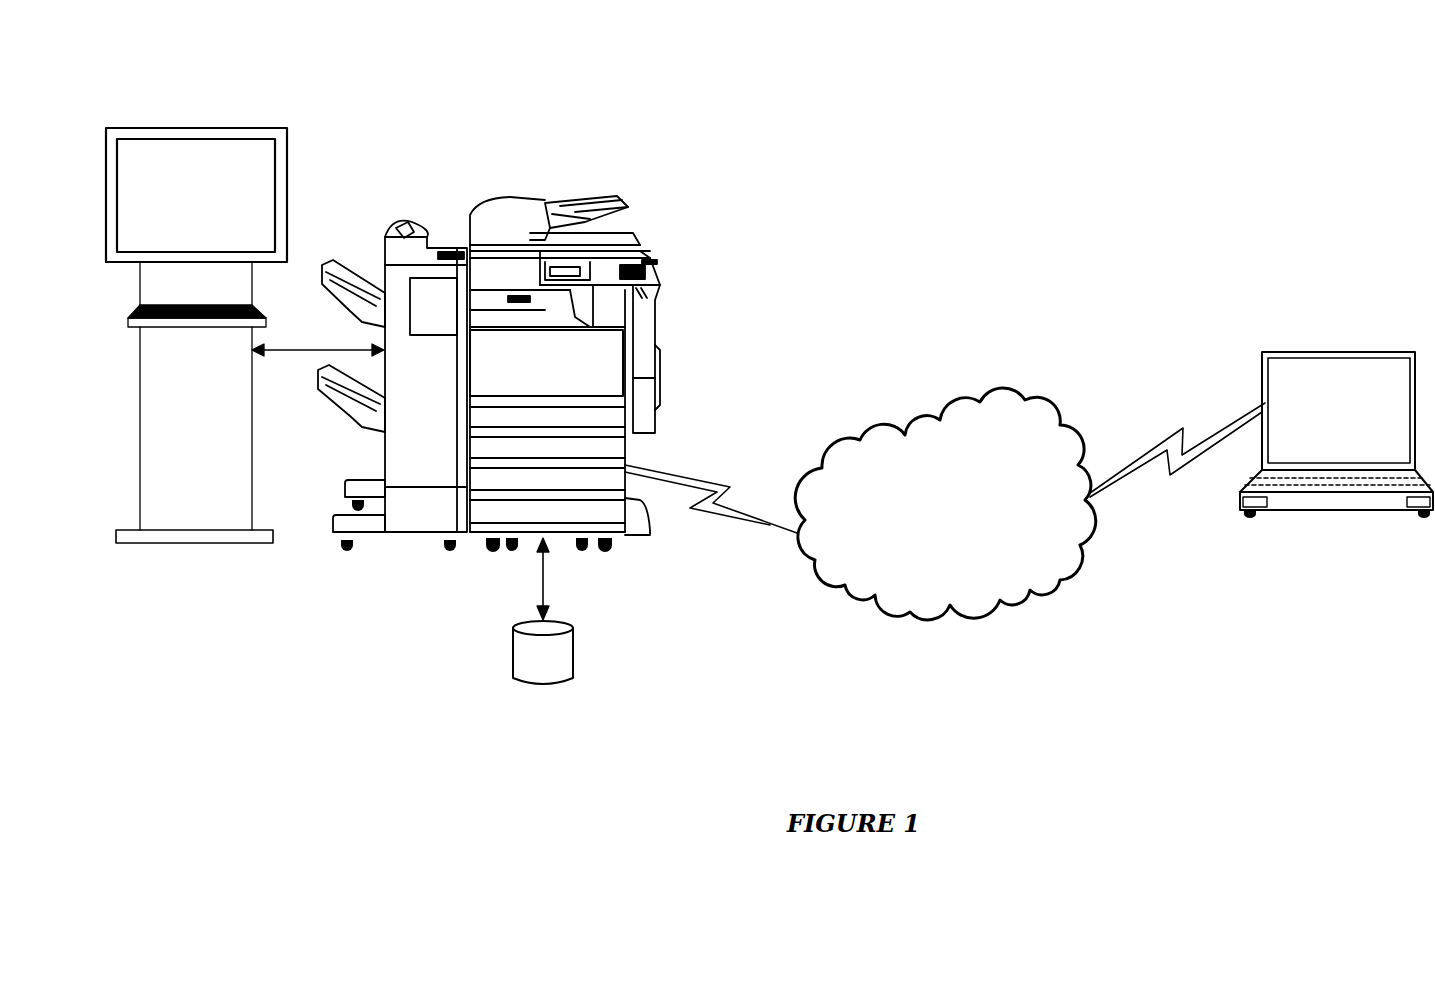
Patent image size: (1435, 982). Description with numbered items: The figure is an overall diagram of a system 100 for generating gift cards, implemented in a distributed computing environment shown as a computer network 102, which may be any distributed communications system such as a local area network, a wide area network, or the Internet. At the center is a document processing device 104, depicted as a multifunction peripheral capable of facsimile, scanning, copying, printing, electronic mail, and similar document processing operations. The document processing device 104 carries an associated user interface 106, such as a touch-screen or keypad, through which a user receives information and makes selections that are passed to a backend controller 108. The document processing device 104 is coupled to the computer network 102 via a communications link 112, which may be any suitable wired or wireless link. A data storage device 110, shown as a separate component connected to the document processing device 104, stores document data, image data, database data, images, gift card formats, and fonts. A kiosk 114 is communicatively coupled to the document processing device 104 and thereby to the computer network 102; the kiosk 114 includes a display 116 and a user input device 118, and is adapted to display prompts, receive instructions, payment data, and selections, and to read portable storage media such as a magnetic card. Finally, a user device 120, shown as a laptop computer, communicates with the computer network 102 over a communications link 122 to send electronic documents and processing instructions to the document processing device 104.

The system 100 is at (1284, 192).
The computer network 102 is at (1000, 398).
The document processing device 104 is at (555, 200).
The user interface 106 is at (656, 269).
The controller 108 is at (620, 386).
The data storage device 110 is at (570, 633).
The communications link 112 is at (716, 486).
The kiosk 114 is at (220, 309).
The display 116 is at (259, 219).
The user input device 118 is at (242, 305).
The user device 120 is at (1362, 352).
The communications link 122 is at (1152, 474).